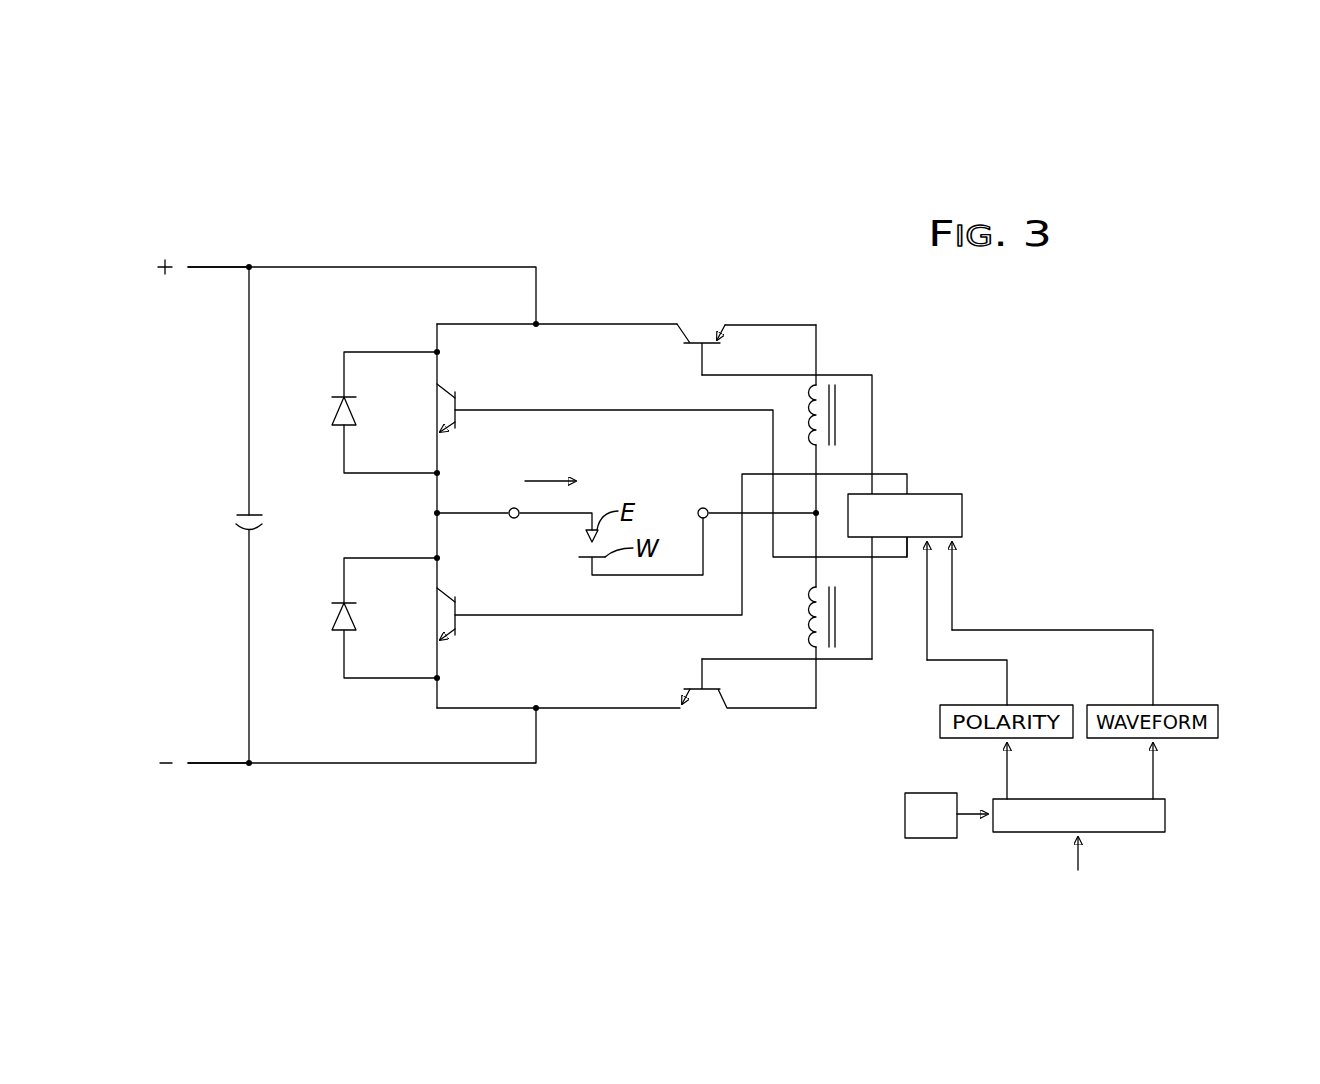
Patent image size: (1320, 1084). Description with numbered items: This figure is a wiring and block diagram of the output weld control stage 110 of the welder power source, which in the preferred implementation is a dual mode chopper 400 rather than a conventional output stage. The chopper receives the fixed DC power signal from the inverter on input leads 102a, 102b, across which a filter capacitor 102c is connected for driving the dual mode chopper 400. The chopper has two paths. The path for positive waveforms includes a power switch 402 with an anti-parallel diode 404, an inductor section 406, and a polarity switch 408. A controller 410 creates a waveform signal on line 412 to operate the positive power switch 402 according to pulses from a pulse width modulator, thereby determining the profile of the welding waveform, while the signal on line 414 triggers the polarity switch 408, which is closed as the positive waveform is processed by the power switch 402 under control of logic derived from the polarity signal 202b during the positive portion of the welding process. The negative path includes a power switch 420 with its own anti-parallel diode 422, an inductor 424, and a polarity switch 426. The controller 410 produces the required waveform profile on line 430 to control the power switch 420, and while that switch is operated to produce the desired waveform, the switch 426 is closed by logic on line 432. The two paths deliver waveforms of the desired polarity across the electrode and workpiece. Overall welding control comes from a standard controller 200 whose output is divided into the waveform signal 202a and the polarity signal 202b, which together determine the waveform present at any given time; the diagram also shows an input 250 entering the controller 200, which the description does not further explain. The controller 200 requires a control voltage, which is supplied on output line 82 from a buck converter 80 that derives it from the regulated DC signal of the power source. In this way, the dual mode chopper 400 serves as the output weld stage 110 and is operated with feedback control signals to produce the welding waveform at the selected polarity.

The output weld control stage 110 is at (677, 245).
The dual mode chopper 400 is at (874, 348).
The input lead 102a is at (216, 268).
The input lead 102b is at (222, 763).
The filter capacitor 102c is at (202, 515).
The power switch 402 is at (442, 384).
The anti-parallel diode 404 is at (352, 413).
The power switch 420 is at (442, 588).
The anti-parallel diode 422 is at (352, 616).
The line 412 is at (623, 411).
The line 430 is at (585, 616).
The polarity switch 426 is at (716, 335).
The line 432 is at (732, 375).
The inductor 424 is at (837, 421).
The inductor section 406 is at (810, 623).
The polarity switch 408 is at (684, 705).
The line 414 is at (843, 660).
The controller 410 is at (938, 494).
The waveform signal 202a is at (958, 661).
The polarity signal 202b is at (1154, 656).
The controller 200 is at (1165, 815).
The converter 80 is at (925, 838).
The output 82 is at (966, 815).
The controller input signal 250 is at (1079, 858).